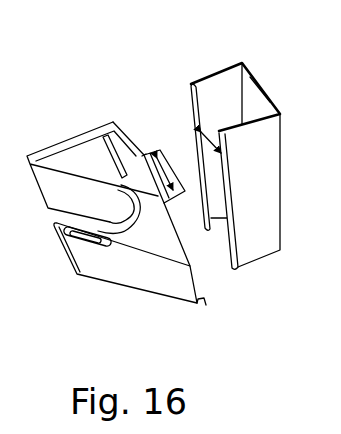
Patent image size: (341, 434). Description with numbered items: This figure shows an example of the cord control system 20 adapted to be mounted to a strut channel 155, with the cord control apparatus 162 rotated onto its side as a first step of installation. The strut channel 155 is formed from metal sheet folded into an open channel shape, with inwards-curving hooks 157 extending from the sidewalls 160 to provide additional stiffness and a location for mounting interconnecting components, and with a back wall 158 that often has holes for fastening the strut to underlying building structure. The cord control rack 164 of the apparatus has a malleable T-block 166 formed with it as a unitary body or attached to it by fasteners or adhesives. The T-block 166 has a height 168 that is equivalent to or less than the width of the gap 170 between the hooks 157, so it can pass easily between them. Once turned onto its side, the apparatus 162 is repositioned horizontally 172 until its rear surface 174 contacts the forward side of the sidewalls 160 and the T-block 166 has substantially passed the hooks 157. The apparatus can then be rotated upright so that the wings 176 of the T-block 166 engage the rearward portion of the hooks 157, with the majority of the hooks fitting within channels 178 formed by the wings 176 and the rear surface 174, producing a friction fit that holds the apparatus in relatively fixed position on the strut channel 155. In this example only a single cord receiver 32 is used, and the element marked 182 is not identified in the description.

The cord control system 20 is at (50, 128).
The cord receiver 32 is at (50, 216).
The strut channel 155 is at (280, 246).
The inwards-curving hooks 157 is at (219, 130).
The back wall 158 is at (266, 94).
The sidewalls 160 is at (192, 82).
The cord control apparatus 162 is at (78, 282).
The cord control rack 164 is at (67, 273).
The malleable T-block 166 is at (105, 148).
The height 168 is at (147, 152).
The gap 170 is at (206, 141).
The horizontal repositioning 172 is at (224, 258).
The rear surface 174 is at (203, 306).
The wings 176 is at (144, 155).
The channels 178 is at (141, 156).
The tongue 182 is at (84, 236).